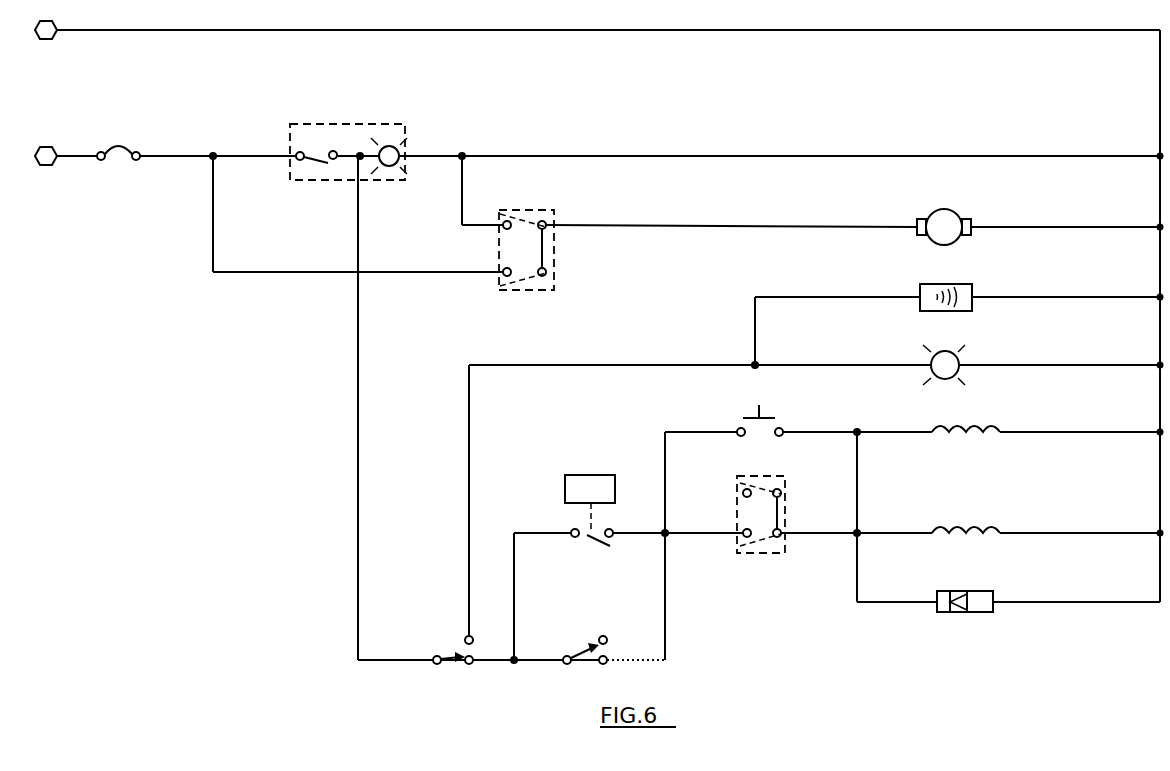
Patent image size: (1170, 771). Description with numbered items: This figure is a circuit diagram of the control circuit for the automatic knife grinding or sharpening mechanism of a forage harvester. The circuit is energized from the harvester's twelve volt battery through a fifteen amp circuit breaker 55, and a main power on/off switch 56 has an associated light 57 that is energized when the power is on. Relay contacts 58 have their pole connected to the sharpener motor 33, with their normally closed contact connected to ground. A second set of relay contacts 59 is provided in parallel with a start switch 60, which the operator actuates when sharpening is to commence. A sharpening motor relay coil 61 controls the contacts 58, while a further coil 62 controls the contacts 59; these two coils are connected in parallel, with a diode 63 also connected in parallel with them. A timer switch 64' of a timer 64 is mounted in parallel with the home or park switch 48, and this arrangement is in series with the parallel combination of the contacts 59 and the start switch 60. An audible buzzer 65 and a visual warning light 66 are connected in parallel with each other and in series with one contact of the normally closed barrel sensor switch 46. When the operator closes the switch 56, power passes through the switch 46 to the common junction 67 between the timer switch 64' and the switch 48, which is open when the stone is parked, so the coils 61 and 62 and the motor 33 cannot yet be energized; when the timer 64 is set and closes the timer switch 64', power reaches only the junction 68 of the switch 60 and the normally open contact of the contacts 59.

The motor 33 is at (948, 212).
The barrel sensor switch 46 is at (447, 641).
The home or park switch 48 is at (574, 642).
The circuit breaker 55 is at (120, 147).
The main power on/off switch 56 is at (318, 165).
The light 57 is at (398, 150).
The relay contacts 58 is at (556, 263).
The relay contacts 59 is at (760, 556).
The start switch 60 is at (797, 415).
The sharpening motor relay coil 61 is at (974, 528).
The coil 62 is at (974, 428).
The diode 63 is at (972, 592).
The timer 64 is at (590, 476).
The timer switch 64' is at (592, 568).
The audible buzzer 65 is at (966, 284).
The visual warning light 66 is at (950, 352).
The common junction 67 is at (512, 662).
The junction 68 is at (667, 535).